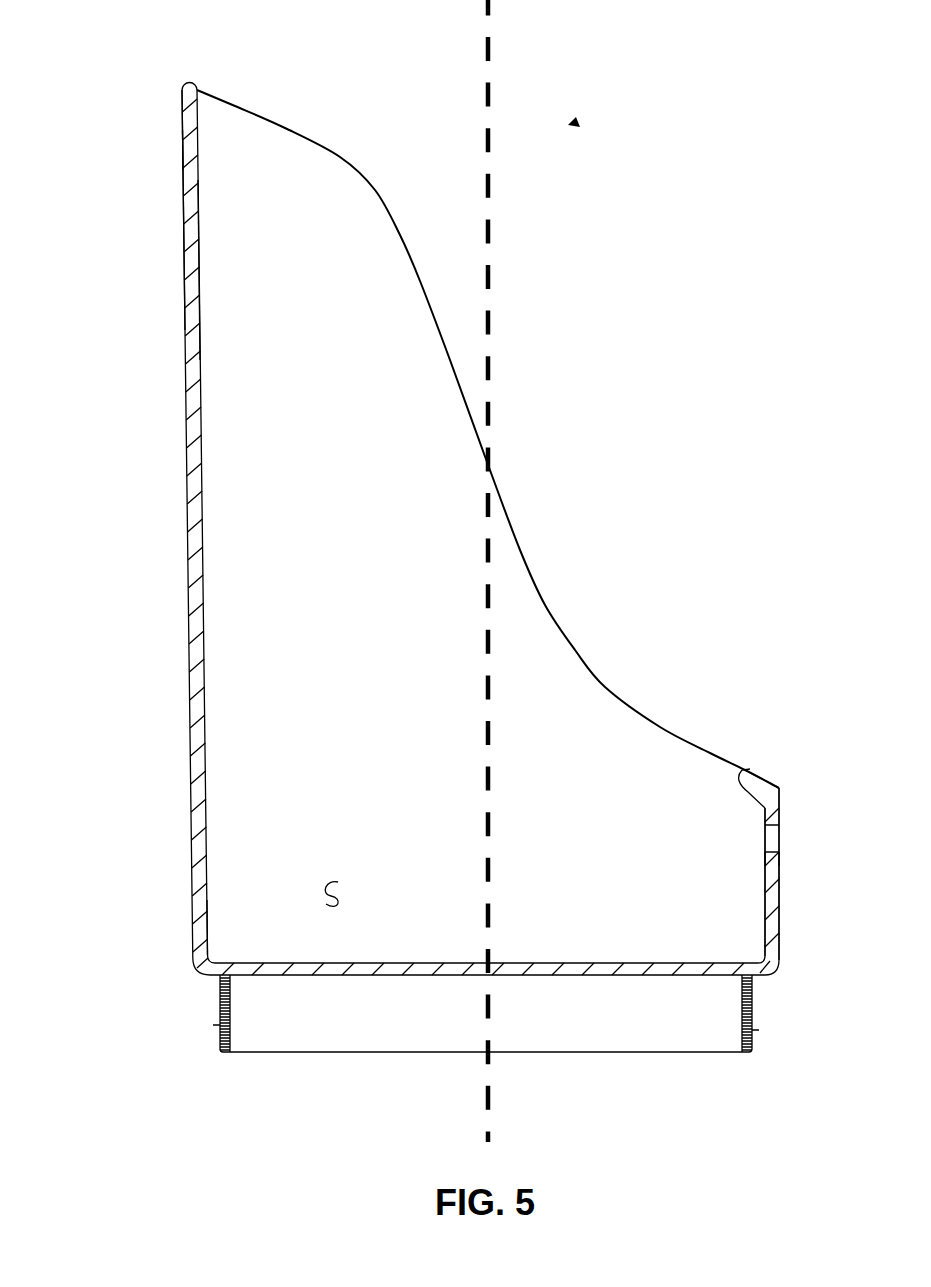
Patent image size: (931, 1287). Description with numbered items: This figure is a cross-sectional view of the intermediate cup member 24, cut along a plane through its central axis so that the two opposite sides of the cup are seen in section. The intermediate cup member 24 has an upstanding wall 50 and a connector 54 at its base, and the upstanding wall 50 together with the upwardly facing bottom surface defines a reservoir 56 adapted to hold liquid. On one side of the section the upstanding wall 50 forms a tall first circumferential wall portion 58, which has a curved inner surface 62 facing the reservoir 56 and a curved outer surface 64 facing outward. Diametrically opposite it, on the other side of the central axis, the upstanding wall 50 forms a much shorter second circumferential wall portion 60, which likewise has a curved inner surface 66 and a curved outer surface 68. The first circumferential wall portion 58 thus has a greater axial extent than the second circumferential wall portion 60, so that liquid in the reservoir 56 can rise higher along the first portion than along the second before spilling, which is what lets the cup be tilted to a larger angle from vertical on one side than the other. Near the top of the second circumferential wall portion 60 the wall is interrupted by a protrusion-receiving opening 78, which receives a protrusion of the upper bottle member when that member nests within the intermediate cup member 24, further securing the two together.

The intermediate cup member 24 is at (566, 127).
The upstanding wall 50 is at (190, 643).
The connector 54 is at (213, 1025).
The reservoir 56 is at (329, 884).
The first circumferential wall portion 58 is at (181, 211).
The second circumferential wall portion 60 is at (762, 808).
The inner surface 62 is at (197, 336).
The outer surface 64 is at (183, 287).
The inner surface 66 is at (762, 771).
The outer surface 68 is at (780, 933).
The protrusion-receiving opening 78 is at (782, 839).